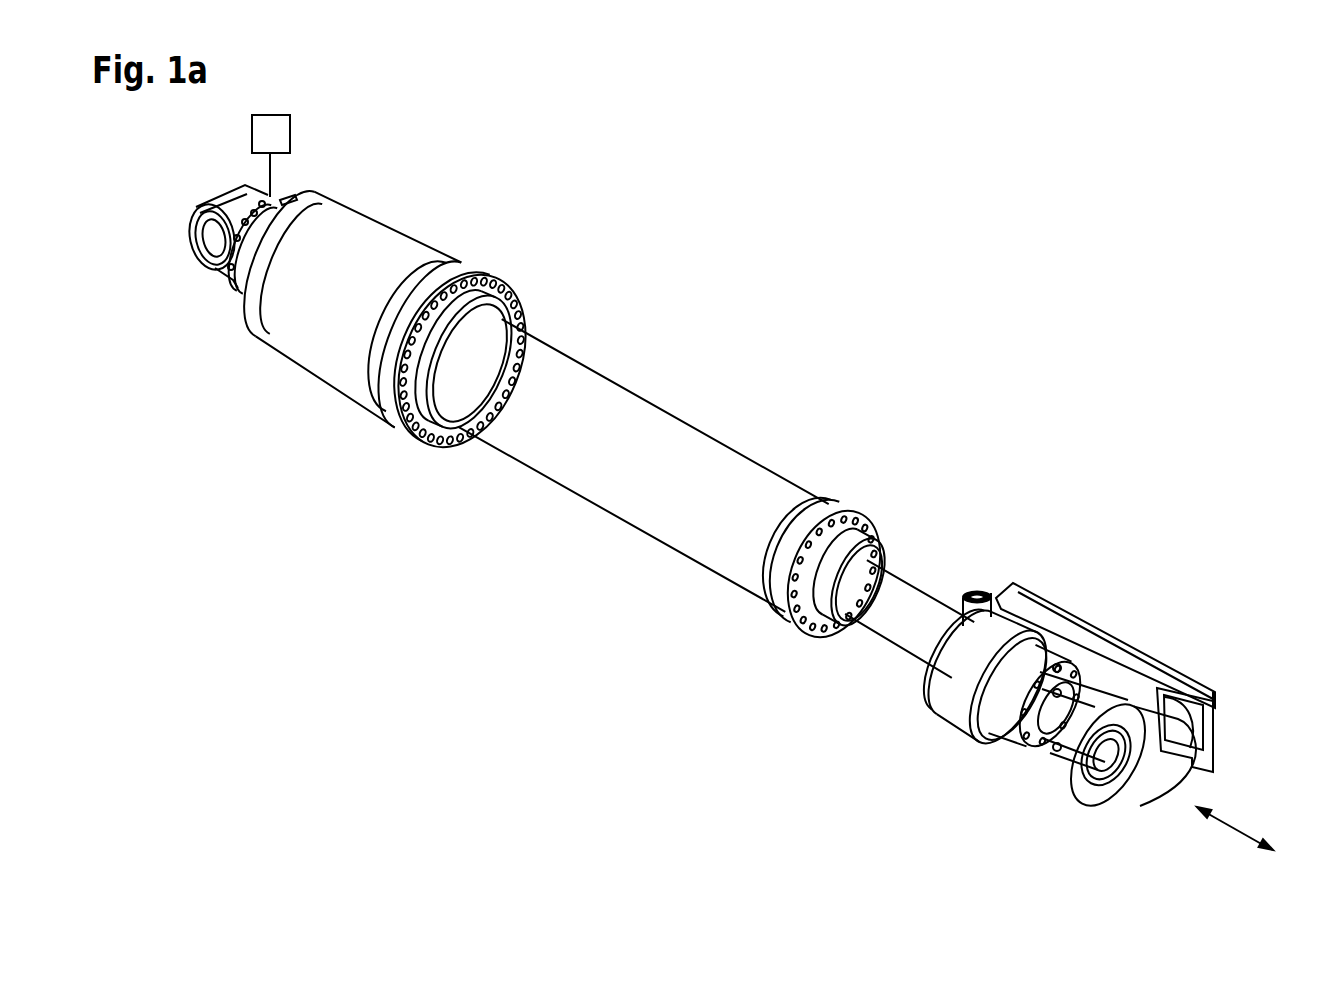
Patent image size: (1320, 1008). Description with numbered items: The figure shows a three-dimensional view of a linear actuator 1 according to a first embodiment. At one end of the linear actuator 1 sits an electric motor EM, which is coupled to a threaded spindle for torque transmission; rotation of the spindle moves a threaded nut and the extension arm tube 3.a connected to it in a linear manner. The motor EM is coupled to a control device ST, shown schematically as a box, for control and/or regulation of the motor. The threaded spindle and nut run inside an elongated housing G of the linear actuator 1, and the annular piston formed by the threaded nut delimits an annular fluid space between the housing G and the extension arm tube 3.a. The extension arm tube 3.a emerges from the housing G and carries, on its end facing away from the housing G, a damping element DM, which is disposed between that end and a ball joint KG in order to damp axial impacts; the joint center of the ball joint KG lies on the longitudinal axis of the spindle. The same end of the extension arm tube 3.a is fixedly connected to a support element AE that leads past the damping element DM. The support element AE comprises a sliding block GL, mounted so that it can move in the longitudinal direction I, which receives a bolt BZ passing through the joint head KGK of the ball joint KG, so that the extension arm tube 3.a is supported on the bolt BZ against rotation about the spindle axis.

The linear actuator 1 is at (923, 262).
The control device ST is at (290, 137).
The electric motor EM is at (418, 222).
The housing G is at (590, 413).
The extension arm tube 3.a is at (890, 613).
The damping element DM is at (980, 702).
The ball joint KG is at (1170, 772).
The joint head KGK is at (1133, 803).
The bolt BZ is at (1108, 766).
The support element AE is at (1140, 687).
The sliding block GL is at (1203, 732).
The longitudinal direction I is at (1232, 819).